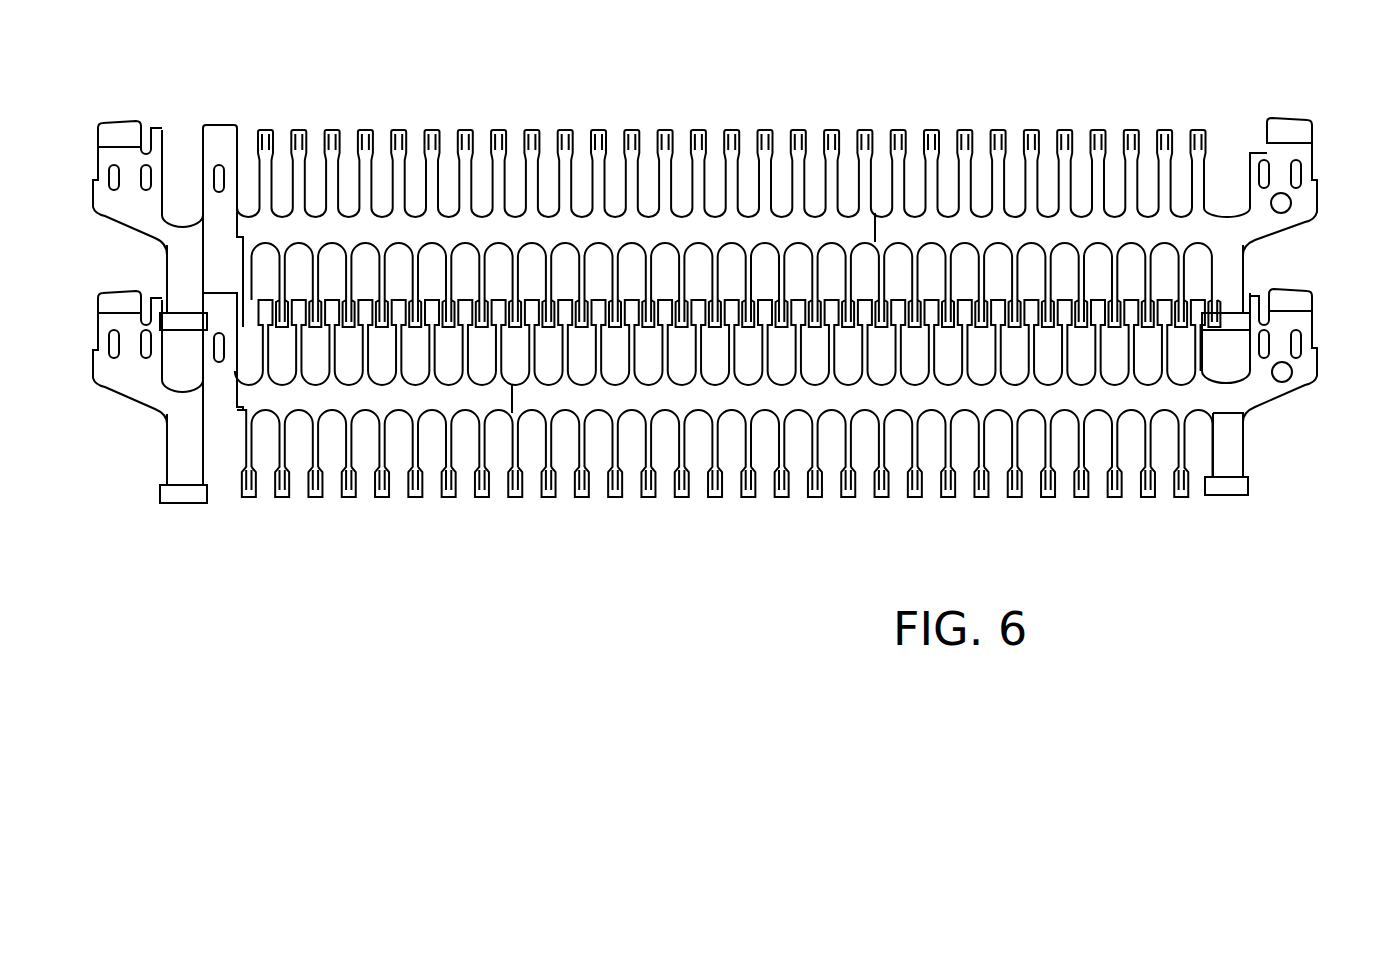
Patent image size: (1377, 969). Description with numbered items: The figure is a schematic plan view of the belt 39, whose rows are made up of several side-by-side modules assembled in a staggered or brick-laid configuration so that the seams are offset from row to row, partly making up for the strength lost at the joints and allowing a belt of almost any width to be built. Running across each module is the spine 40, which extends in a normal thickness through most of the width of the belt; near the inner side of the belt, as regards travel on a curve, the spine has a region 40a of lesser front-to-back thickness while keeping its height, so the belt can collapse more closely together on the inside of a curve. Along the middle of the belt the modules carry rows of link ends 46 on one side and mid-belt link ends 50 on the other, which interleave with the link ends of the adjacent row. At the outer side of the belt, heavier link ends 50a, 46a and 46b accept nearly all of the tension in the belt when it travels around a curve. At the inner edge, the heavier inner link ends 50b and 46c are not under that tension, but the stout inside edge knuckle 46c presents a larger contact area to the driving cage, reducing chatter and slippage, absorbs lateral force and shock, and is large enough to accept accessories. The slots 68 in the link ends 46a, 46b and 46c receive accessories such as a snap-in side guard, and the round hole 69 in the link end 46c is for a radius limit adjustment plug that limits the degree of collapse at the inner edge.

The belt 39 is at (777, 82).
The spine 40 is at (475, 233).
The region of the spine 40a is at (1040, 233).
The link ends 46 is at (627, 130).
The heavier link end 46a is at (123, 373).
The heavier link end 46b is at (222, 373).
The inside edge knuckle 46c is at (1305, 370).
The mid-belt link ends 50 is at (315, 500).
The heavier link end 50a is at (178, 463).
The heavier inner link end 50b is at (1233, 453).
The slots 68 is at (141, 192).
The round hole 69 is at (1286, 211).